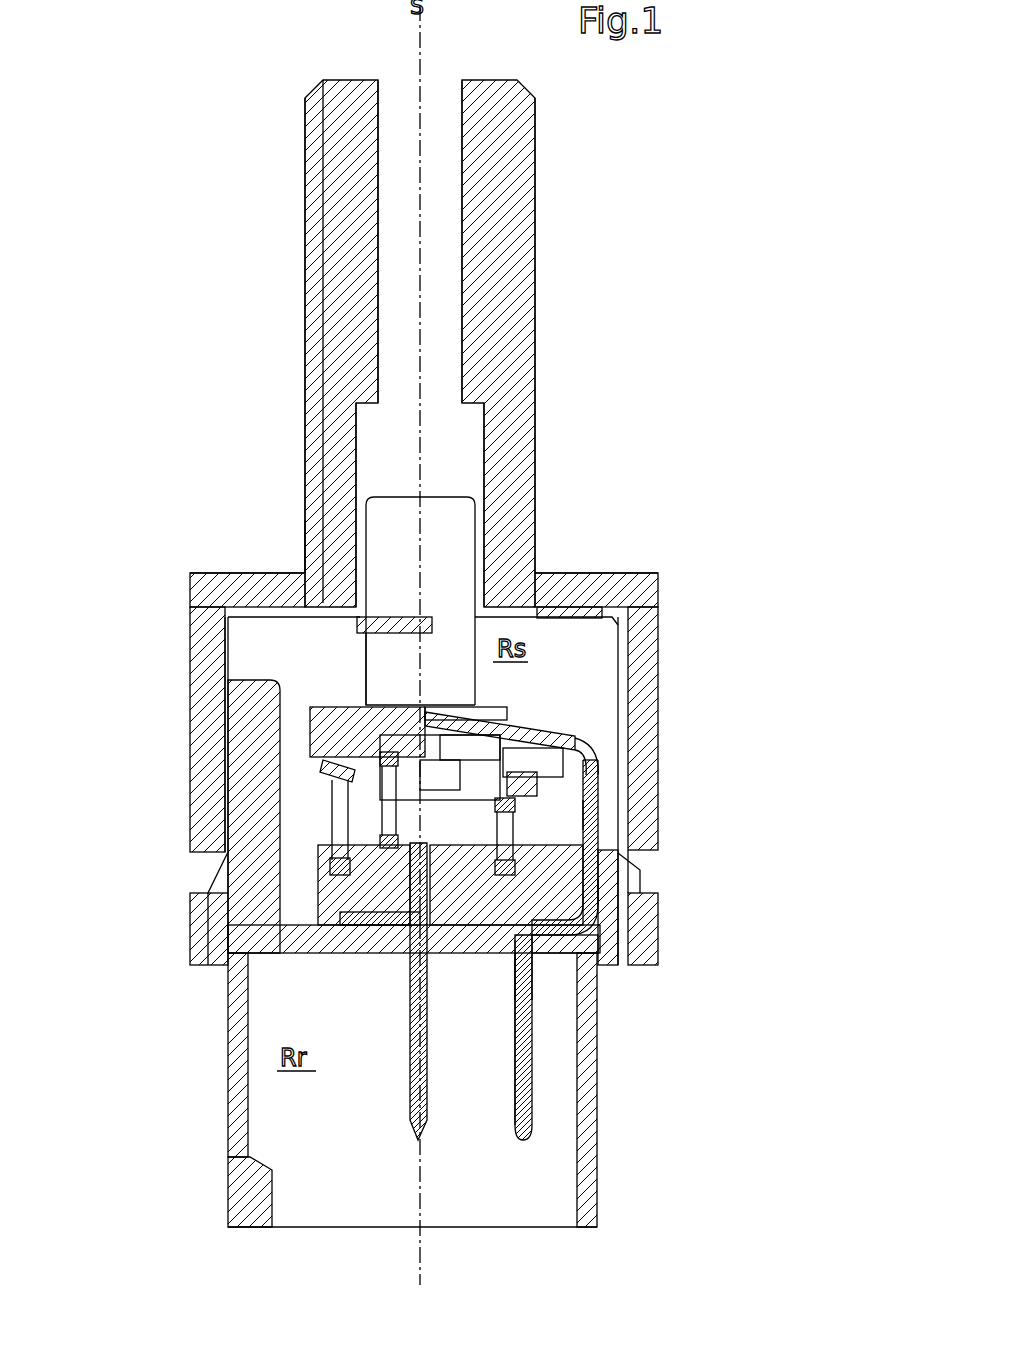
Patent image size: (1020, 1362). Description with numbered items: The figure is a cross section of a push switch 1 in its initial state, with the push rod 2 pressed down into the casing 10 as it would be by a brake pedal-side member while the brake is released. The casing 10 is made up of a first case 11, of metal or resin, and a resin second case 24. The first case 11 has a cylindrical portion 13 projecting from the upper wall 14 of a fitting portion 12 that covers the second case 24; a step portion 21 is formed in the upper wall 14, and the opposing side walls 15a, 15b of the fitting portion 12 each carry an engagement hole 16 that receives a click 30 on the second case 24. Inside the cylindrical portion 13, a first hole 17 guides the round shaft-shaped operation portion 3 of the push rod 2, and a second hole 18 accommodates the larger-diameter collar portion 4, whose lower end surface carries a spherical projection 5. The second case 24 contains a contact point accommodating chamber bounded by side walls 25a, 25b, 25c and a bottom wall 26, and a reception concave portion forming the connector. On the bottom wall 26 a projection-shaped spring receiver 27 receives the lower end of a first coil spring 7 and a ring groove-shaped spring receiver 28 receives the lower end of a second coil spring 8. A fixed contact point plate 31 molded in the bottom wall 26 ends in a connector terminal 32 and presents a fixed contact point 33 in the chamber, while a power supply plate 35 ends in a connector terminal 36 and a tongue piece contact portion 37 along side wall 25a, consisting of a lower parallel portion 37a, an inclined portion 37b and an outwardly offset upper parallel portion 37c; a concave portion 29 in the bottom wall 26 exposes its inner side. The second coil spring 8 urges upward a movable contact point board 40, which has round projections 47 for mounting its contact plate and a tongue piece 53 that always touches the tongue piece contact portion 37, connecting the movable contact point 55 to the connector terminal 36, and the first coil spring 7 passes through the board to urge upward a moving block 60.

The push switch 1 is at (632, 188).
The push rod 2 is at (437, 80).
The operation portion 3 is at (398, 133).
The collar portion 4 is at (310, 515).
The projection 5 is at (440, 705).
The first coil spring 7 is at (380, 815).
The second coil spring 8 is at (515, 818).
The casing 10 is at (437, 742).
The first case 11 is at (190, 697).
The fitting portion 12 is at (440, 712).
The cylindrical portion 13 is at (495, 256).
The upper wall 14 is at (567, 573).
The side wall 15a is at (640, 733).
The side wall 15b is at (225, 775).
The engagement hole 16 is at (636, 857).
The first hole 17 is at (447, 155).
The second hole 18 is at (475, 435).
The step portion 21 is at (243, 582).
The second case 24 is at (228, 1083).
The side wall 25a is at (660, 915).
The side wall 25b is at (228, 745).
The side wall 25c is at (228, 653).
The bottom wall 26 is at (483, 953).
The spring receiver 27 is at (437, 880).
The spring receiver 28 is at (327, 775).
The concave portion 29 is at (535, 868).
The click 30 is at (640, 873).
The fixed contact point plate 31 is at (365, 965).
The connector terminal 32 is at (410, 1085).
The fixed contact point 33 is at (388, 617).
The power supply plate 35 is at (562, 967).
The connector terminal 36 is at (515, 1087).
The tongue piece contact portion 37 is at (596, 760).
The lower parallel portion 37a is at (620, 895).
The inclined portion 37b is at (600, 822).
The upper parallel portion 37c is at (620, 785).
The movable contact point board 40 is at (262, 815).
The round projection 47 is at (515, 725).
The tongue piece 53 is at (572, 742).
The movable contact point 55 is at (393, 705).
The moving block 60 is at (322, 707).